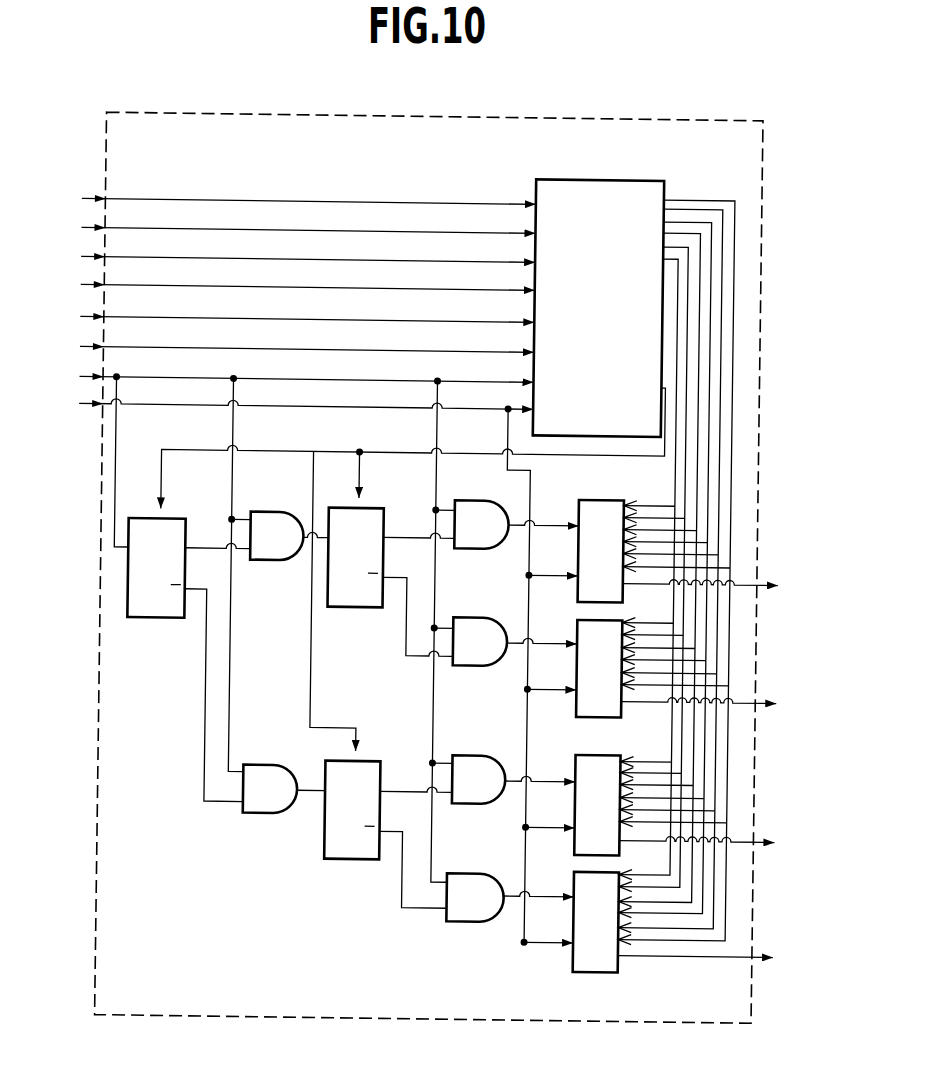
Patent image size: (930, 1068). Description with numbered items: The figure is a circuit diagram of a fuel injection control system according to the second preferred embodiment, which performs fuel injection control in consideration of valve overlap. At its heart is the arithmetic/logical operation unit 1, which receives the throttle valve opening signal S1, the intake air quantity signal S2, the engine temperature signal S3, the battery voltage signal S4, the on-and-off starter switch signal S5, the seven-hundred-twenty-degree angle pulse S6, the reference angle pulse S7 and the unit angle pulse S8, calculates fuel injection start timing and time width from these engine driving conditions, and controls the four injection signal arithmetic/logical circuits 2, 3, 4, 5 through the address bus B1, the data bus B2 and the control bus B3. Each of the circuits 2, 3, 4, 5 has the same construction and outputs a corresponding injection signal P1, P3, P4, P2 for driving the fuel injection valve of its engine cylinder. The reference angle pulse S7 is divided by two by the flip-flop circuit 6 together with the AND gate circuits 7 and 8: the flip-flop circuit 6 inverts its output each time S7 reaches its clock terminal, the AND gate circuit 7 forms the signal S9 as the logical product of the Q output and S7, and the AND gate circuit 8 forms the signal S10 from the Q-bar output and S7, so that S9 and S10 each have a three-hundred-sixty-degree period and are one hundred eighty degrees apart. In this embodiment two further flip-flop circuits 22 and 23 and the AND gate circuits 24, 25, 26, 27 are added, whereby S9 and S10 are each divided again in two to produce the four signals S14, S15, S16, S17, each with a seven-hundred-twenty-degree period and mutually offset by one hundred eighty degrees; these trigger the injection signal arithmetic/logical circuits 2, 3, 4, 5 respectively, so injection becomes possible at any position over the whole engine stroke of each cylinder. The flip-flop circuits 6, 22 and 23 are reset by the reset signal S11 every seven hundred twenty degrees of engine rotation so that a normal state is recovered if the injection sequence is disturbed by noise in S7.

The arithmetic/logical operation unit 1 is at (617, 178).
The injection signal arithmetic/logical circuit 2 is at (601, 551).
The injection signal arithmetic/logical circuit 3 is at (599, 669).
The injection signal arithmetic/logical circuit 4 is at (597, 805).
The injection signal arithmetic/logical circuit 5 is at (596, 922).
The flip-flop circuit 6 is at (168, 621).
The AND gate circuit 7 is at (280, 562).
The AND gate circuit 8 is at (275, 815).
The flip-flop circuit 22 is at (365, 608).
The flip-flop circuit 23 is at (361, 860).
The AND gate circuit 24 is at (481, 548).
The AND gate circuit 25 is at (478, 667).
The AND gate circuit 26 is at (476, 803).
The AND gate circuit 27 is at (472, 921).
The throttle valve opening signal S1 is at (294, 202).
The intake air quantity signal S2 is at (293, 231).
The engine temperature signal S3 is at (293, 260).
The battery voltage signal S4 is at (293, 288).
The on-and-off signal S5 is at (292, 320).
The 720° angle pulse S6 is at (292, 350).
The reference angle pulse S7 is at (291, 380).
The unit angle pulse S8 is at (291, 407).
The signal S9 is at (308, 537).
The signal S10 is at (311, 789).
The reset signal S11 is at (360, 451).
The signal S14 is at (518, 527).
The signal S15 is at (518, 645).
The signal S16 is at (515, 783).
The signal S17 is at (515, 898).
The address bus B1 is at (683, 197).
The data bus B2 is at (693, 219).
The control bus B3 is at (668, 256).
The injection signal P1 is at (713, 586).
The injection signal P2 is at (708, 958).
The injection signal P3 is at (711, 704).
The injection signal P4 is at (709, 843).